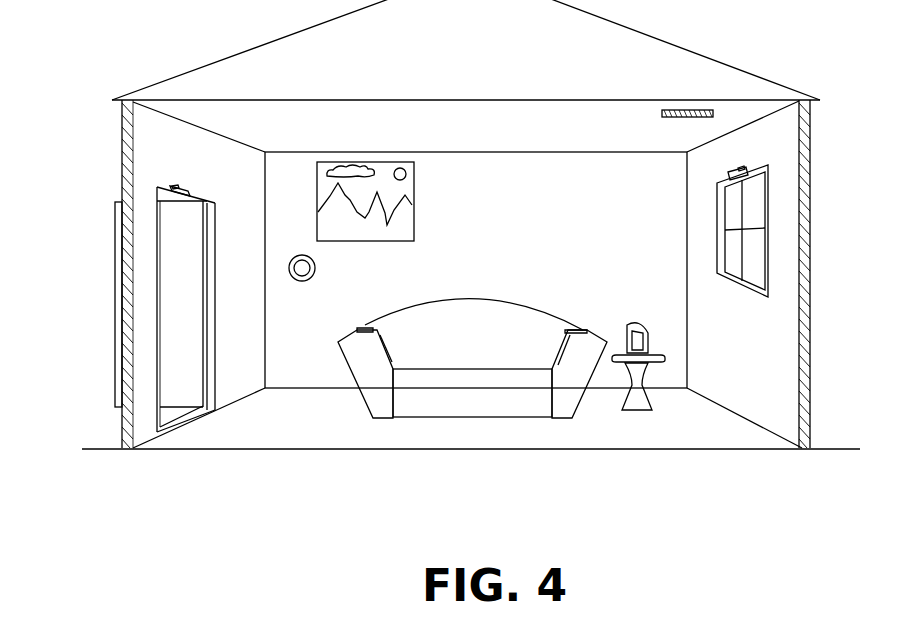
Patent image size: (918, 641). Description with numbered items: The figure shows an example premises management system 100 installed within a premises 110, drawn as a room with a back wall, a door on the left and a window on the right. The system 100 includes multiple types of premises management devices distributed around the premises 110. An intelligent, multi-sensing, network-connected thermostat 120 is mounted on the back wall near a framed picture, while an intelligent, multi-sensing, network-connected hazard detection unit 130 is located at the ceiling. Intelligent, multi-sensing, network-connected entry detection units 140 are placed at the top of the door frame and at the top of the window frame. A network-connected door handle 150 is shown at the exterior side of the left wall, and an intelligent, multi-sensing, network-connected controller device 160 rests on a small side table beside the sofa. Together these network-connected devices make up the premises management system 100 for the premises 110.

The premises management system 100 is at (492, 523).
The premises 110 is at (483, 240).
The thermostat 120 is at (288, 276).
The hazard detection unit 130 is at (668, 120).
The entry detection unit 140 is at (176, 186).
The door handle 150 is at (112, 302).
The controller device 160 is at (632, 322).